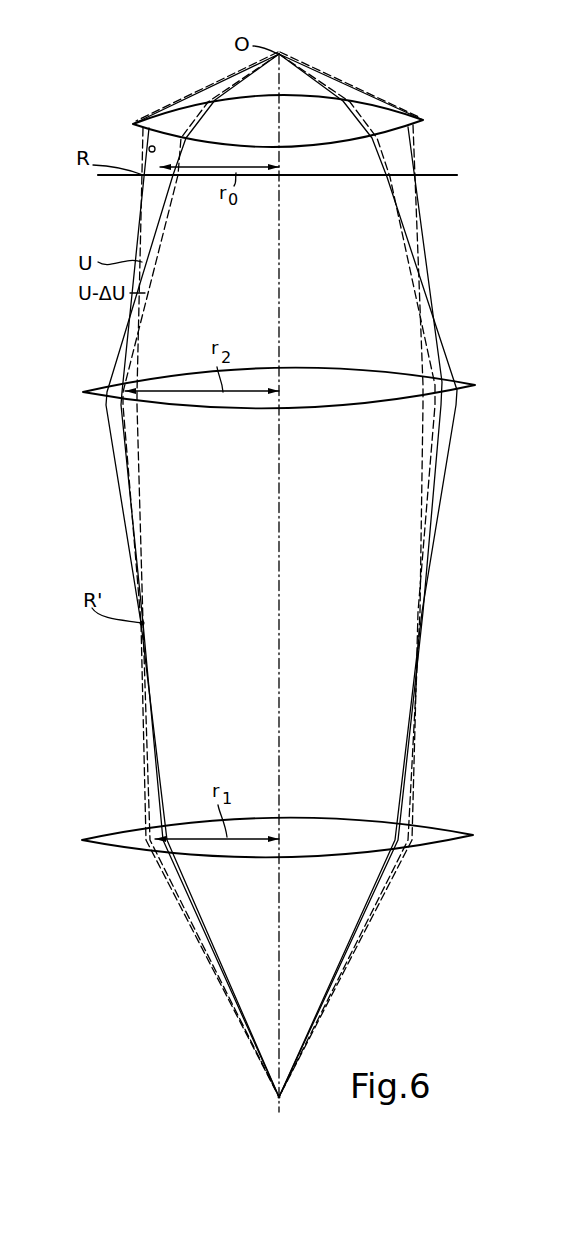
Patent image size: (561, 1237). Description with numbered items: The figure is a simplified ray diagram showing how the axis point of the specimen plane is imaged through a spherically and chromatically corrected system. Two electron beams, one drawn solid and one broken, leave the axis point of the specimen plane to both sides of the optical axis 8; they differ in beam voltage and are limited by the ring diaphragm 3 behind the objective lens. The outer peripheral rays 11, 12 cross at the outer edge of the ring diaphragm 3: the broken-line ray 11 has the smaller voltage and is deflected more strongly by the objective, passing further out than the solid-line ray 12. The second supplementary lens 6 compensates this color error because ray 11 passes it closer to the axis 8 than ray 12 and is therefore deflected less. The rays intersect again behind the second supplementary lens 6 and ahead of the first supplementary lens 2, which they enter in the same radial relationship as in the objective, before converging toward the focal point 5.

The first supplementary lens 2 is at (437, 835).
The ring diaphragm 3 is at (447, 174).
The focal point / specimen spot 5 is at (278, 1100).
The second supplementary lens 6 is at (392, 388).
The optical axis 8 is at (280, 522).
The outer peripheral ray (low-energy) 11 is at (147, 137).
The outer peripheral ray (high-energy) 12 is at (149, 147).